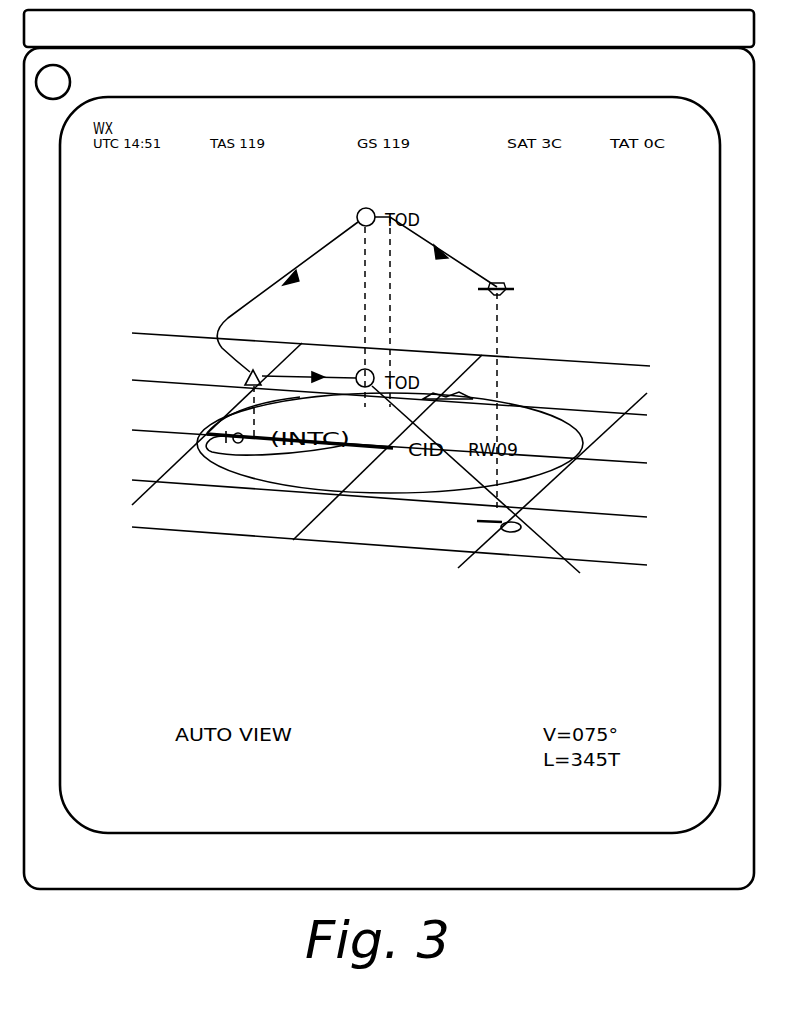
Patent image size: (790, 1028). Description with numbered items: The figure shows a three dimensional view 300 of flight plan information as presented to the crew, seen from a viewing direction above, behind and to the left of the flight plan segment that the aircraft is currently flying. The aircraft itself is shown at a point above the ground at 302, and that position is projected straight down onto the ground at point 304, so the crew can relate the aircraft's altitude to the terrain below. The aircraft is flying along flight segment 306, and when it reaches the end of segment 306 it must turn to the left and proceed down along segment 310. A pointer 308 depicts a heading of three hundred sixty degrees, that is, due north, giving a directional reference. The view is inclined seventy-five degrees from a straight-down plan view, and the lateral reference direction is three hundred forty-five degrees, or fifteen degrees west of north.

The three dimensional view 300 is at (606, 240).
The aircraft point 302 is at (523, 285).
The ground projection point 304 is at (492, 524).
The flight segment 306 is at (452, 247).
The pointer 308 is at (445, 382).
The flight segment 310 is at (287, 272).